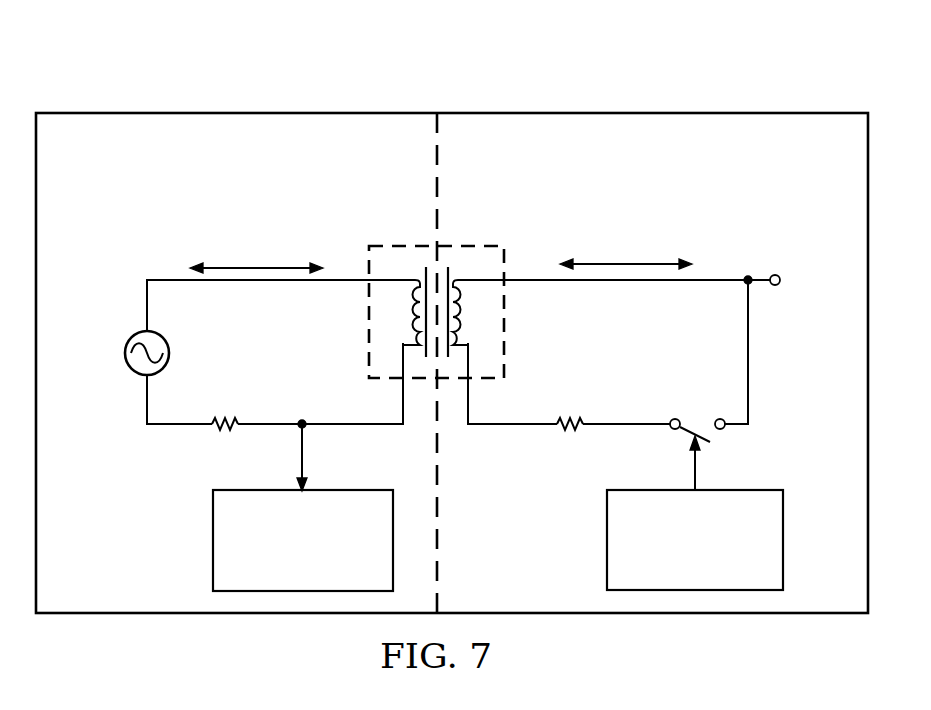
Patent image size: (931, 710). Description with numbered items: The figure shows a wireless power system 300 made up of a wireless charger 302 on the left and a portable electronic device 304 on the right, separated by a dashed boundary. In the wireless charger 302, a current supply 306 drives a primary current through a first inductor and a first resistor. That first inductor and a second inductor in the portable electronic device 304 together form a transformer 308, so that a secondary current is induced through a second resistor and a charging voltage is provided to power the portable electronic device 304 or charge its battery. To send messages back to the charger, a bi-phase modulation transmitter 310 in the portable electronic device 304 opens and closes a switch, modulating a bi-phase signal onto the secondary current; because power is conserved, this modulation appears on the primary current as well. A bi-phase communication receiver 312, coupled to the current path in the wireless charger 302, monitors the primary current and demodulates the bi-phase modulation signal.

The wireless power system 300 is at (300, 78).
The wireless charger 302 is at (257, 202).
The portable electronic device 304 is at (674, 202).
The current supply 306 is at (125, 352).
The transformer 308 is at (368, 329).
The bi-phase modulation transmitter 310 is at (784, 540).
The bi-phase communication receiver 312 is at (212, 540).